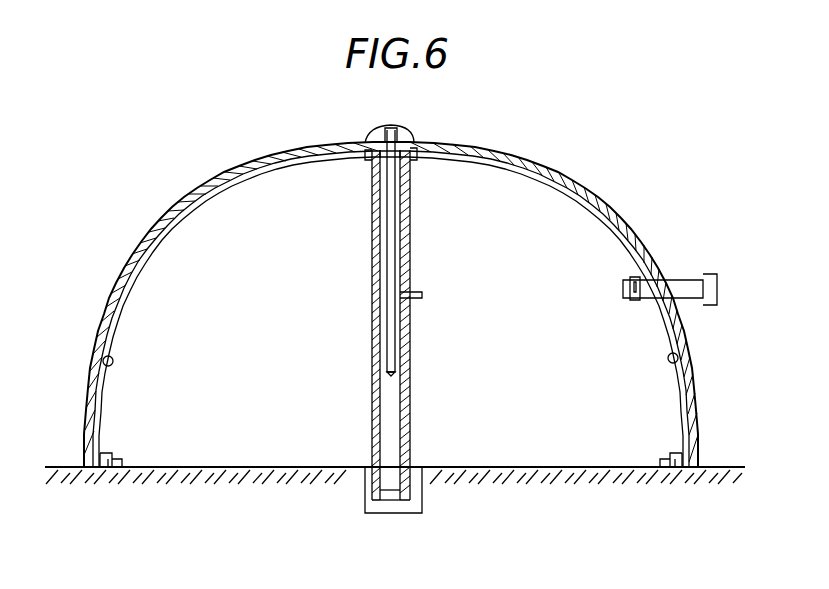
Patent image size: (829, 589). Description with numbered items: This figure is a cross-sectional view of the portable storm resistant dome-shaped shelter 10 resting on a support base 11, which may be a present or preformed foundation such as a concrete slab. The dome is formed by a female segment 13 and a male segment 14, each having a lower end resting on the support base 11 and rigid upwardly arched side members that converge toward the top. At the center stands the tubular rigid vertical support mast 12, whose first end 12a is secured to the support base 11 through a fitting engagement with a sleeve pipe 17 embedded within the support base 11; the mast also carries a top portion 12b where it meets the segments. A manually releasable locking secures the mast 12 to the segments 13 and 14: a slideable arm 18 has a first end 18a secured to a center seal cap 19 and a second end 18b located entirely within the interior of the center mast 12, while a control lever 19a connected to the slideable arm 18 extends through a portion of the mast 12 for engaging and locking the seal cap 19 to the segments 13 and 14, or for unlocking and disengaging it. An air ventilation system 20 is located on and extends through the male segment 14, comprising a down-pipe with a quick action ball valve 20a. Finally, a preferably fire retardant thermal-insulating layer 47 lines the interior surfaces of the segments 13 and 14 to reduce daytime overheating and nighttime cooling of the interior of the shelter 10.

The dome-shaped shelter 10 is at (391, 274).
The support base 11 is at (607, 468).
The tubular rigid vertical support mast 12 is at (411, 394).
The first end of mast 12a is at (394, 500).
The post top flange 12b is at (416, 155).
The female segment 13 is at (174, 203).
The male segment 14 is at (610, 196).
The sleeve pipe 17 is at (372, 492).
The slideable arm 18 is at (386, 275).
The first end of slideable arm 18a is at (386, 130).
The second end of slideable arm 18b is at (391, 374).
The center seal cap 19 is at (399, 129).
The control lever 19a is at (421, 297).
The air ventilation system 20 is at (712, 275).
The quick action ball valve 20a is at (632, 300).
The thermal-insulating layer 47 is at (174, 222).